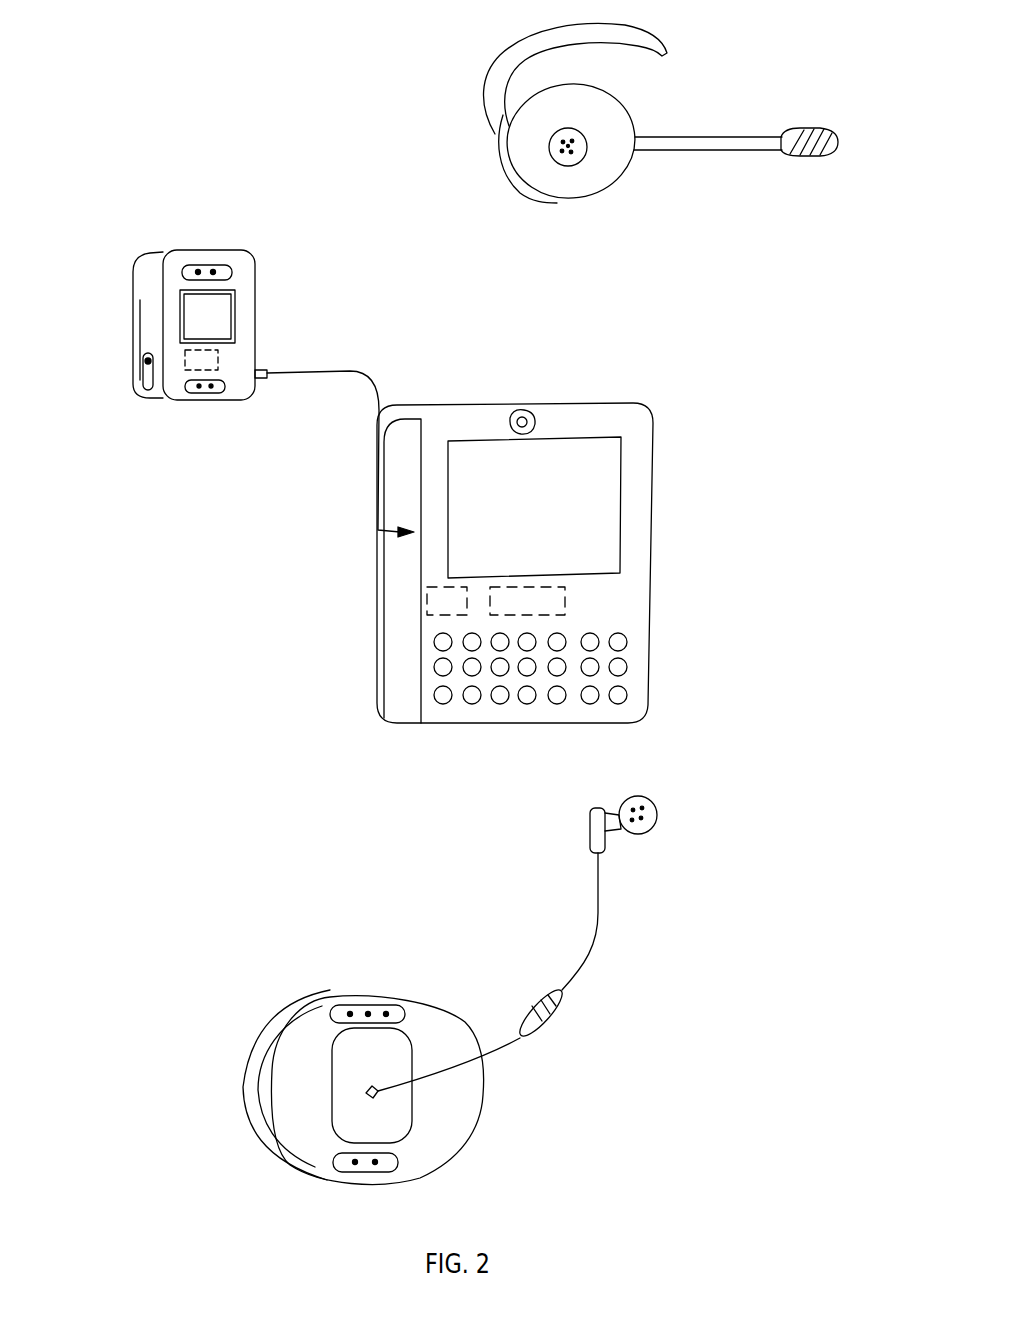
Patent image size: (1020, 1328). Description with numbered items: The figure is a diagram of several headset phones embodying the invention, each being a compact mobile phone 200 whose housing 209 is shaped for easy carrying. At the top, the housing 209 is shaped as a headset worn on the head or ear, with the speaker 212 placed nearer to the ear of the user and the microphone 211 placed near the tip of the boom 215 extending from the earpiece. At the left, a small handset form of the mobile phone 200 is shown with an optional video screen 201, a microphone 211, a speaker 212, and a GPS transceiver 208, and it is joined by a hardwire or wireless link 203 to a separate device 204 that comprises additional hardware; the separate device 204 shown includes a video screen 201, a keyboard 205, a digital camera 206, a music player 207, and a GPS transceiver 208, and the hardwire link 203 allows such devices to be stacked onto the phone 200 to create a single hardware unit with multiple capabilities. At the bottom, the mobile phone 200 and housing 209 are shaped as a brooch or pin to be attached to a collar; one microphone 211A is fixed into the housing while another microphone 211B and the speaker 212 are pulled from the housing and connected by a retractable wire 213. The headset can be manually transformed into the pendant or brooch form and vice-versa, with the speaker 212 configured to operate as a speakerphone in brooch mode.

The mobile phone 200 is at (415, 601).
The video screen 201 is at (232, 329).
The hardwire or wireless link 203 is at (368, 390).
The separate device 204 is at (523, 726).
The keyboard 205 is at (627, 663).
The digital camera 206 is at (523, 407).
The music player 207 is at (427, 597).
The Global Position System (GPS) transceiver 208 is at (185, 355).
The housing 209 is at (163, 288).
The microphone 211 is at (812, 160).
The microphone 211A is at (400, 1165).
The microphone 211B is at (552, 1021).
The speaker 212 is at (567, 168).
The retractable wire 213 is at (596, 933).
The boom 215 is at (667, 137).